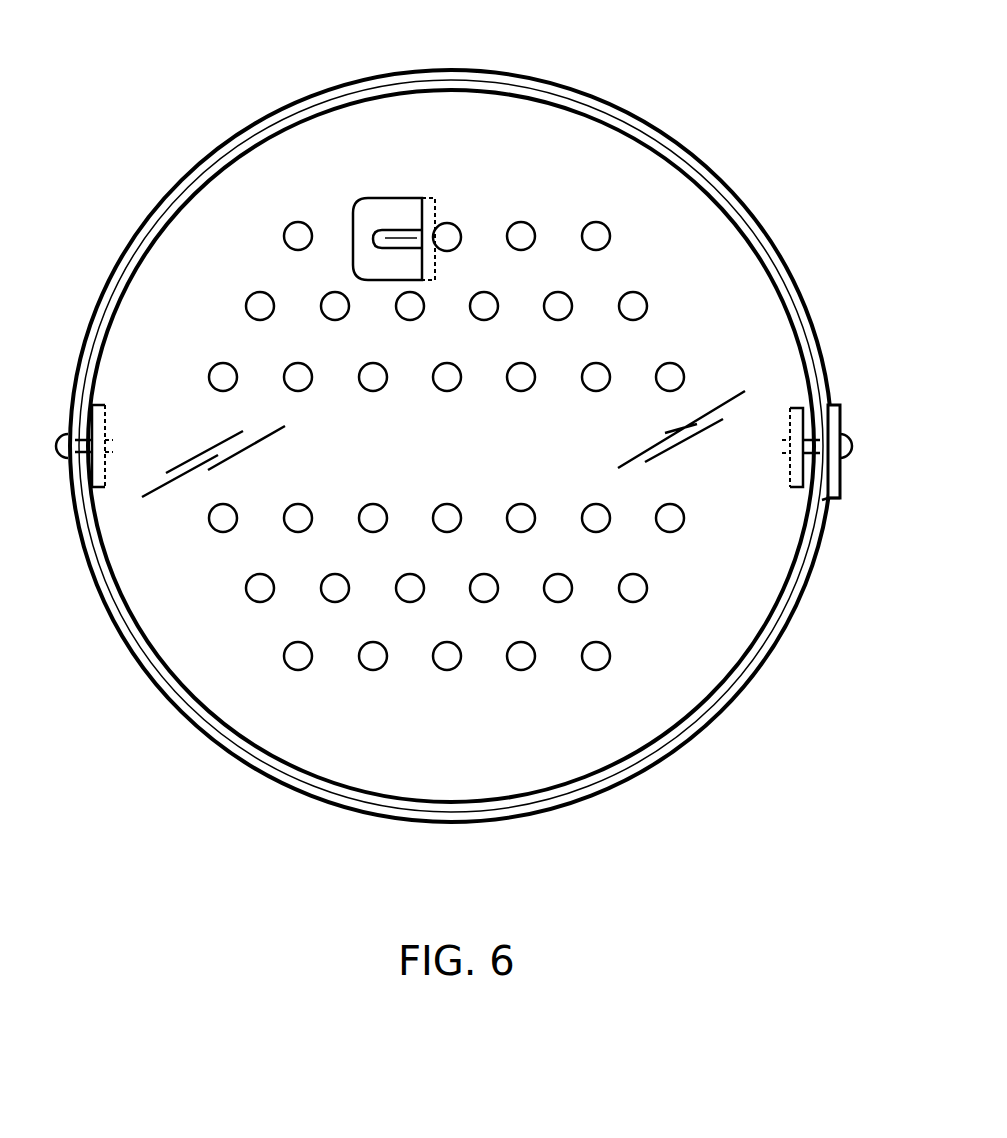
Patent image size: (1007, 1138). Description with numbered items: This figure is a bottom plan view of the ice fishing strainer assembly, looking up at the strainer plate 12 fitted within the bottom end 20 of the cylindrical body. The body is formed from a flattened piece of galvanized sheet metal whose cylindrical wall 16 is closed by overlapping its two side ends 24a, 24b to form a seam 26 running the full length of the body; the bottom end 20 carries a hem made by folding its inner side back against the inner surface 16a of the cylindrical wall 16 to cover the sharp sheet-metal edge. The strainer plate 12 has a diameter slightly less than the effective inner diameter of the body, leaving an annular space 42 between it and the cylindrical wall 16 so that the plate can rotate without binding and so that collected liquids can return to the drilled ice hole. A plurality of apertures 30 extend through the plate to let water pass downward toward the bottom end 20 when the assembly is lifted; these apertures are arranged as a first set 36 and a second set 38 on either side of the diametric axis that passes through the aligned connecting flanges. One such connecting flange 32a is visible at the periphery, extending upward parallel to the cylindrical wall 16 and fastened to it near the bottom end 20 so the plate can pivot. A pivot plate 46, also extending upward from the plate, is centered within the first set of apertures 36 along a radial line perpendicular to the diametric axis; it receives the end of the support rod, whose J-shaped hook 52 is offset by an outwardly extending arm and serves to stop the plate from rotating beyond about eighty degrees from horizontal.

The strainer plate 12 is at (588, 719).
The cylindrical wall 16 is at (270, 112).
The inner surface 16a is at (537, 806).
The bottom end 20 is at (451, 448).
The side end 24a is at (841, 420).
The side end 24b is at (820, 505).
The seam 26 is at (838, 405).
The apertures 30 is at (447, 672).
The connecting flange 32a is at (90, 487).
The first set of apertures 36 is at (606, 226).
The second set of apertures 38 is at (296, 671).
The annular space 42 is at (345, 94).
The pivot plate 46 is at (430, 237).
The J-shaped hook 52 is at (400, 236).